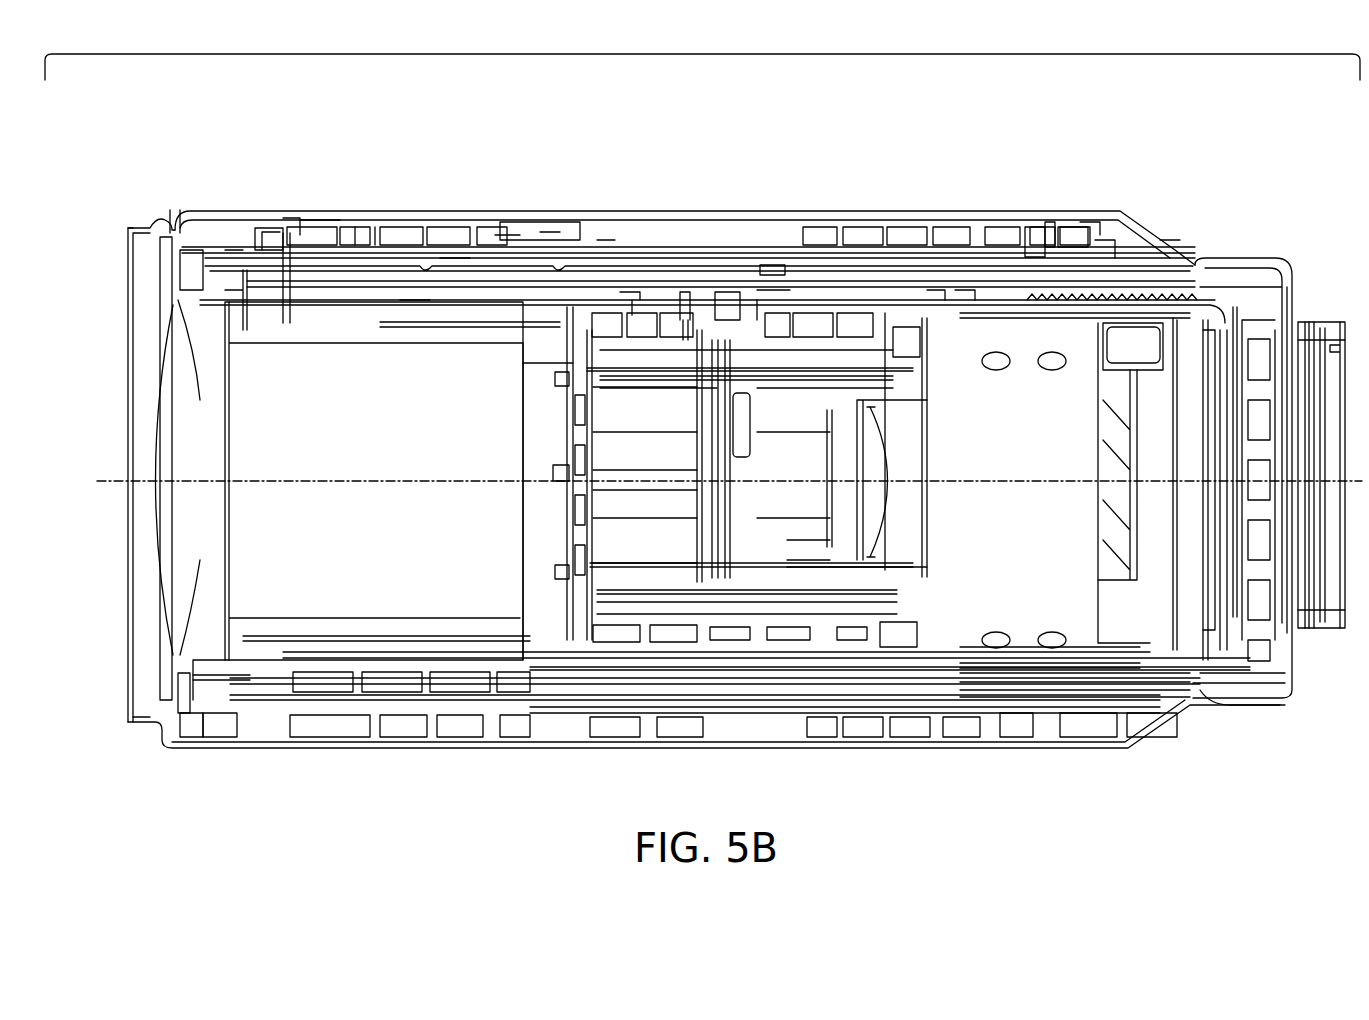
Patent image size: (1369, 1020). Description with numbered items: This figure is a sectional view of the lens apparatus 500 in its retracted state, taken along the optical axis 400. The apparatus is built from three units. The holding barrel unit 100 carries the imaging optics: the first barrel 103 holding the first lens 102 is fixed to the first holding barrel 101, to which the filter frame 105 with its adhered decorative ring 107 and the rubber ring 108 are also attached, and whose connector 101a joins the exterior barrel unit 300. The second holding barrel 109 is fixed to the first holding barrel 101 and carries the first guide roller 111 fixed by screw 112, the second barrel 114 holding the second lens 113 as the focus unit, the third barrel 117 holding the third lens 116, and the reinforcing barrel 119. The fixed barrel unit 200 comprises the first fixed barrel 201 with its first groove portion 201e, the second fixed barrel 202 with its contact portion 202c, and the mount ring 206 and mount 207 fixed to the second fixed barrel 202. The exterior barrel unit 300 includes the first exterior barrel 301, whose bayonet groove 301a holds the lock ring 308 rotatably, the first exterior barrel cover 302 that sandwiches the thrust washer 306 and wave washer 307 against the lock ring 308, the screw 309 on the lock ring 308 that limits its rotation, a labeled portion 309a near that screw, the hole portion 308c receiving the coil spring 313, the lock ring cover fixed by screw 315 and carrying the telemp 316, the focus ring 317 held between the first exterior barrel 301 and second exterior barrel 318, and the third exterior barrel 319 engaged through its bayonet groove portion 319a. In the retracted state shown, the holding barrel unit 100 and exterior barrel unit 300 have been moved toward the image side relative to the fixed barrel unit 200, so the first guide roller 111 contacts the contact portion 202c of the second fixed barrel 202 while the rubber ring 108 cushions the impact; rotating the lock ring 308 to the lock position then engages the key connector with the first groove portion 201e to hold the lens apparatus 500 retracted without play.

The lens apparatus 500 is at (710, 52).
The holding barrel unit 100 is at (308, 385).
The first holding barrel 101 is at (408, 300).
The connector 101a is at (270, 228).
The first lens 102 is at (225, 300).
The first barrel 103 is at (197, 400).
The filter frame 105 is at (190, 210).
The decorative ring 107 is at (177, 283).
The rubber ring 108 is at (312, 220).
The second holding barrel 109 is at (975, 340).
The first guide roller 111 is at (704, 330).
The screw 112 is at (722, 292).
The second lens 113 is at (775, 330).
The second barrel 114 is at (683, 292).
The third lens 116 is at (857, 398).
The third barrel 117 is at (900, 388).
The reinforcing barrel 119 is at (1207, 377).
The fixed barrel unit 200 is at (1193, 290).
The first fixed barrel 201 is at (447, 258).
The first groove portion 201e is at (630, 292).
The second fixed barrel 202 is at (810, 290).
The contact portion 202c is at (772, 265).
The mount ring 206 is at (1258, 300).
The mount 207 is at (1300, 330).
The exterior barrel unit 300 is at (578, 238).
The first exterior barrel 301 is at (930, 290).
The bayonet groove 301a is at (1100, 240).
The first exterior barrel cover 302 is at (963, 290).
The thrust washer 306 is at (1035, 227).
The wave washer 307 is at (1048, 222).
The lock ring 308 is at (1065, 227).
The hole portion 308c is at (1080, 222).
The screw 309 is at (1125, 296).
The gear engaging portion 309a is at (637, 300).
The coil spring 313 is at (1172, 250).
The screw 315 is at (603, 240).
The telemp 316 is at (550, 232).
The focus ring 317 is at (510, 235).
The second exterior barrel 318 is at (262, 230).
The third exterior barrel 319 is at (365, 228).
The bayonet groove portion 319a is at (288, 210).
The optical axis 400 is at (138, 480).